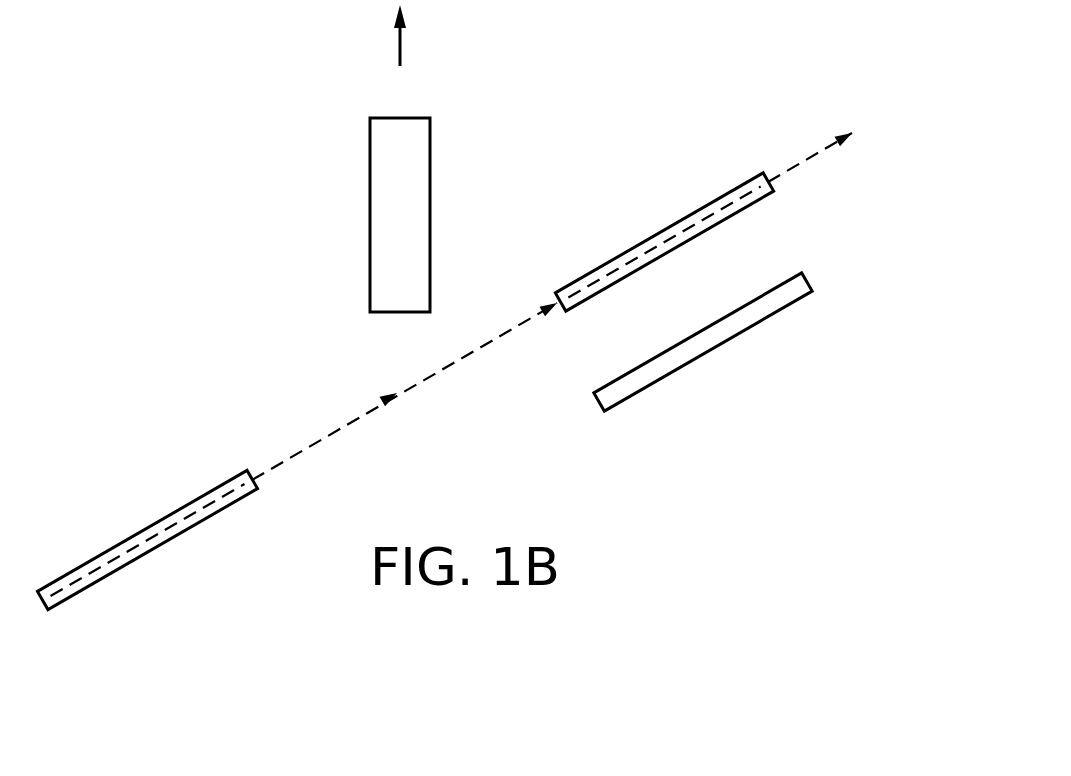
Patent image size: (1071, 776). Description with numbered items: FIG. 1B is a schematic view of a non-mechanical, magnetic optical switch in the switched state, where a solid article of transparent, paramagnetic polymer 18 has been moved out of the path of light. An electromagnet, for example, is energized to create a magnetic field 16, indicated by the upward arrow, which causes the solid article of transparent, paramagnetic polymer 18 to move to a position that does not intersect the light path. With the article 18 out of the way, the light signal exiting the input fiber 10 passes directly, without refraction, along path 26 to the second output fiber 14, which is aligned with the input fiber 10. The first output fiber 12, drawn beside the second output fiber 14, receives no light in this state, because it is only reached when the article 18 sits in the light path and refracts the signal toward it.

The input fiber 10 is at (130, 533).
The first output fiber 12 is at (675, 342).
The second output fiber 14 is at (610, 258).
The magnetic field 16 is at (398, 41).
The solid article of transparent, paramagnetic polymer 18 is at (398, 117).
The path 26 is at (322, 435).